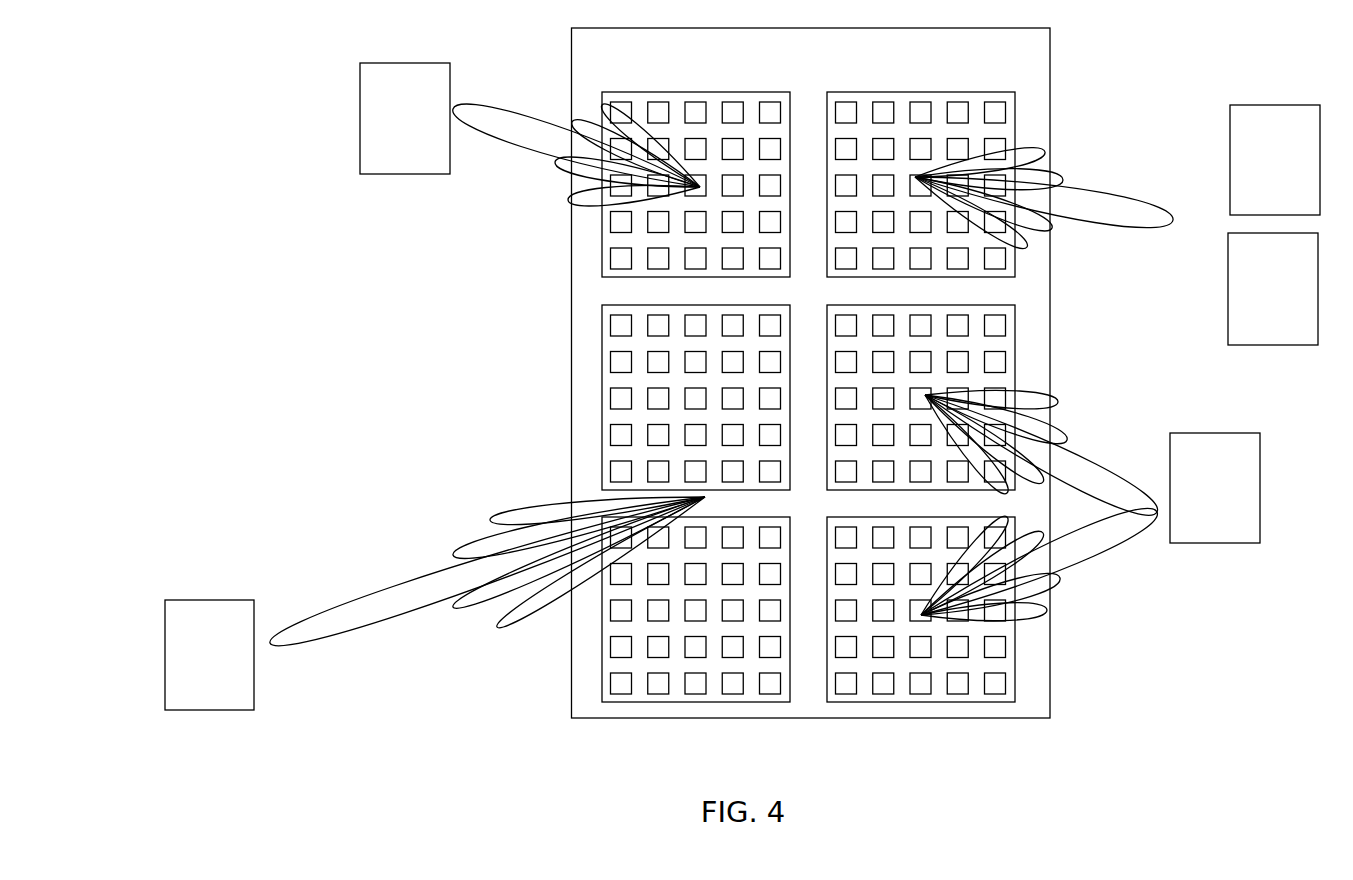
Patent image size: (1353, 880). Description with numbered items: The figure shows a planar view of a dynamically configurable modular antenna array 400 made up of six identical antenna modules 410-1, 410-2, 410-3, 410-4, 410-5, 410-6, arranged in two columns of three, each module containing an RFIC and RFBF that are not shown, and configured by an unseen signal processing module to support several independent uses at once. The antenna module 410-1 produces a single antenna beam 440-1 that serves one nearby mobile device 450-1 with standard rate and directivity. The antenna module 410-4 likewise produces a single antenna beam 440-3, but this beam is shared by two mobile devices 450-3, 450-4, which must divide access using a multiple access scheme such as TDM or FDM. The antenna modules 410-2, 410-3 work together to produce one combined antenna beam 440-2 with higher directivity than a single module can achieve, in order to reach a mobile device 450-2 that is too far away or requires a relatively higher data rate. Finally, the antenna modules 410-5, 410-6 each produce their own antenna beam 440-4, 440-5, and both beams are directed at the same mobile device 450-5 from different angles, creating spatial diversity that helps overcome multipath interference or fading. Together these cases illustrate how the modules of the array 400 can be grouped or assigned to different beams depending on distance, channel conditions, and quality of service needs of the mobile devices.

The modular antenna array 400 is at (811, 373).
The antenna module 410-1 is at (602, 248).
The antenna module 410-2 is at (602, 398).
The antenna module 410-3 is at (602, 680).
The antenna module 410-4 is at (1015, 122).
The antenna module 410-5 is at (1015, 352).
The antenna module 410-6 is at (1015, 682).
The antenna beam 440-1 is at (510, 120).
The antenna beam 440-2 is at (342, 623).
The antenna beam 440-3 is at (1060, 203).
The antenna beam 440-4 is at (1052, 467).
The antenna beam 440-5 is at (1068, 557).
The mobile device 450-1 is at (405, 118).
The mobile device 450-2 is at (209, 655).
The mobile device 450-3 is at (1275, 160).
The mobile device 450-4 is at (1273, 289).
The mobile device 450-5 is at (1215, 488).